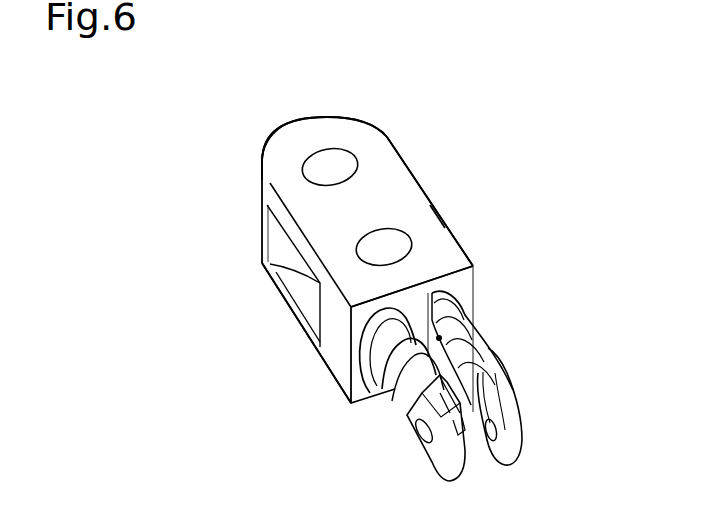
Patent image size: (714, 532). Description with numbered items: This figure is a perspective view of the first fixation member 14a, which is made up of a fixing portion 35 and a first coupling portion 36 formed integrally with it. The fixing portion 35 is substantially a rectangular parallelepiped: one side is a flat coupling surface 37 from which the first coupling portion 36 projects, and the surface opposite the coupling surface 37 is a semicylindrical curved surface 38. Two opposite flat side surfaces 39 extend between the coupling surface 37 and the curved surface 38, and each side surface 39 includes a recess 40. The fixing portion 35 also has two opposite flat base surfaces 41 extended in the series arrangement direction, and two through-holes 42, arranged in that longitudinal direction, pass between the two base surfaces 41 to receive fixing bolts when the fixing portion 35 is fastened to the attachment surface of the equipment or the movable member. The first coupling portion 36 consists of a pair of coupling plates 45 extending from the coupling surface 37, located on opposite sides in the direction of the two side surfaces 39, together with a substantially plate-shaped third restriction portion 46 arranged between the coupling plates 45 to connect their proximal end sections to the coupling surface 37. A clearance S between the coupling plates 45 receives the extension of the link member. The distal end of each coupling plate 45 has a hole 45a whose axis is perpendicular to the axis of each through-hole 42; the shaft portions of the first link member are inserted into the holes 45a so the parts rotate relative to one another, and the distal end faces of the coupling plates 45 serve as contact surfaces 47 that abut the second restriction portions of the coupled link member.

The first fixation member 14a is at (541, 198).
The fixing portion 35 is at (416, 170).
The first coupling portion 36 is at (506, 358).
The coupling surface 37 is at (461, 289).
The curved surface 38 is at (272, 133).
The side surfaces 39 is at (436, 208).
The recess 40 is at (310, 286).
The base surfaces 41 is at (372, 128).
The through-holes 42 is at (318, 160).
The coupling plates 45 is at (507, 373).
The hole 45a is at (431, 440).
The third restriction portion 46 is at (473, 356).
The contact surfaces 47 is at (460, 482).
The clearance S is at (439, 336).